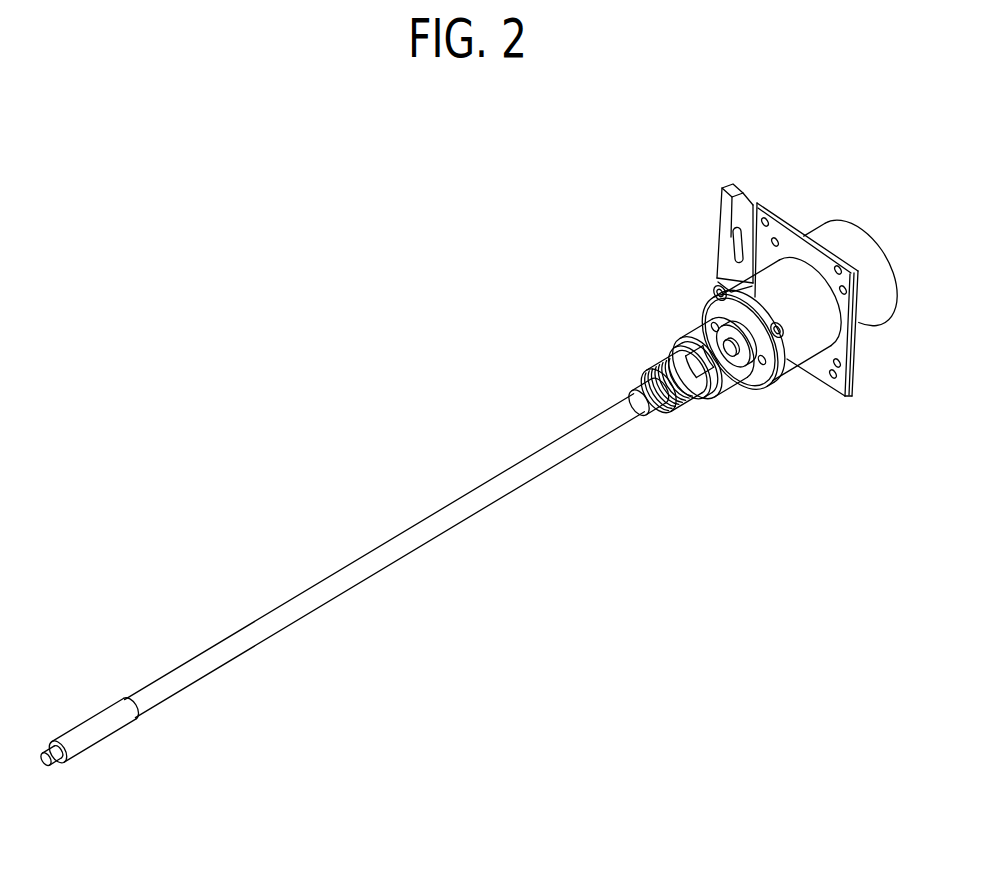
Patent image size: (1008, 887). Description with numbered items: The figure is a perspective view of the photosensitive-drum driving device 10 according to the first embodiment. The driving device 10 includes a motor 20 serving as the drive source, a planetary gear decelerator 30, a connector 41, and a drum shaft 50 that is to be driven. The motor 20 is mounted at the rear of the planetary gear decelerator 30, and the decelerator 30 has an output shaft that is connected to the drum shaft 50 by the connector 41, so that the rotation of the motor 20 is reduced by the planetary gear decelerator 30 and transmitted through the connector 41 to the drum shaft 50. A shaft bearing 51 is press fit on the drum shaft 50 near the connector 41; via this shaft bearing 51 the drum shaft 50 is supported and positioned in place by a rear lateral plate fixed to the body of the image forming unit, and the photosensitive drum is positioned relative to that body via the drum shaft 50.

The photosensitive-drum driving device 10 is at (426, 264).
The motor 20 is at (855, 237).
The planetary gear decelerator 30 is at (793, 360).
The connector 41 is at (735, 350).
The drum shaft 50 is at (465, 495).
The shaft bearing 51 is at (703, 342).